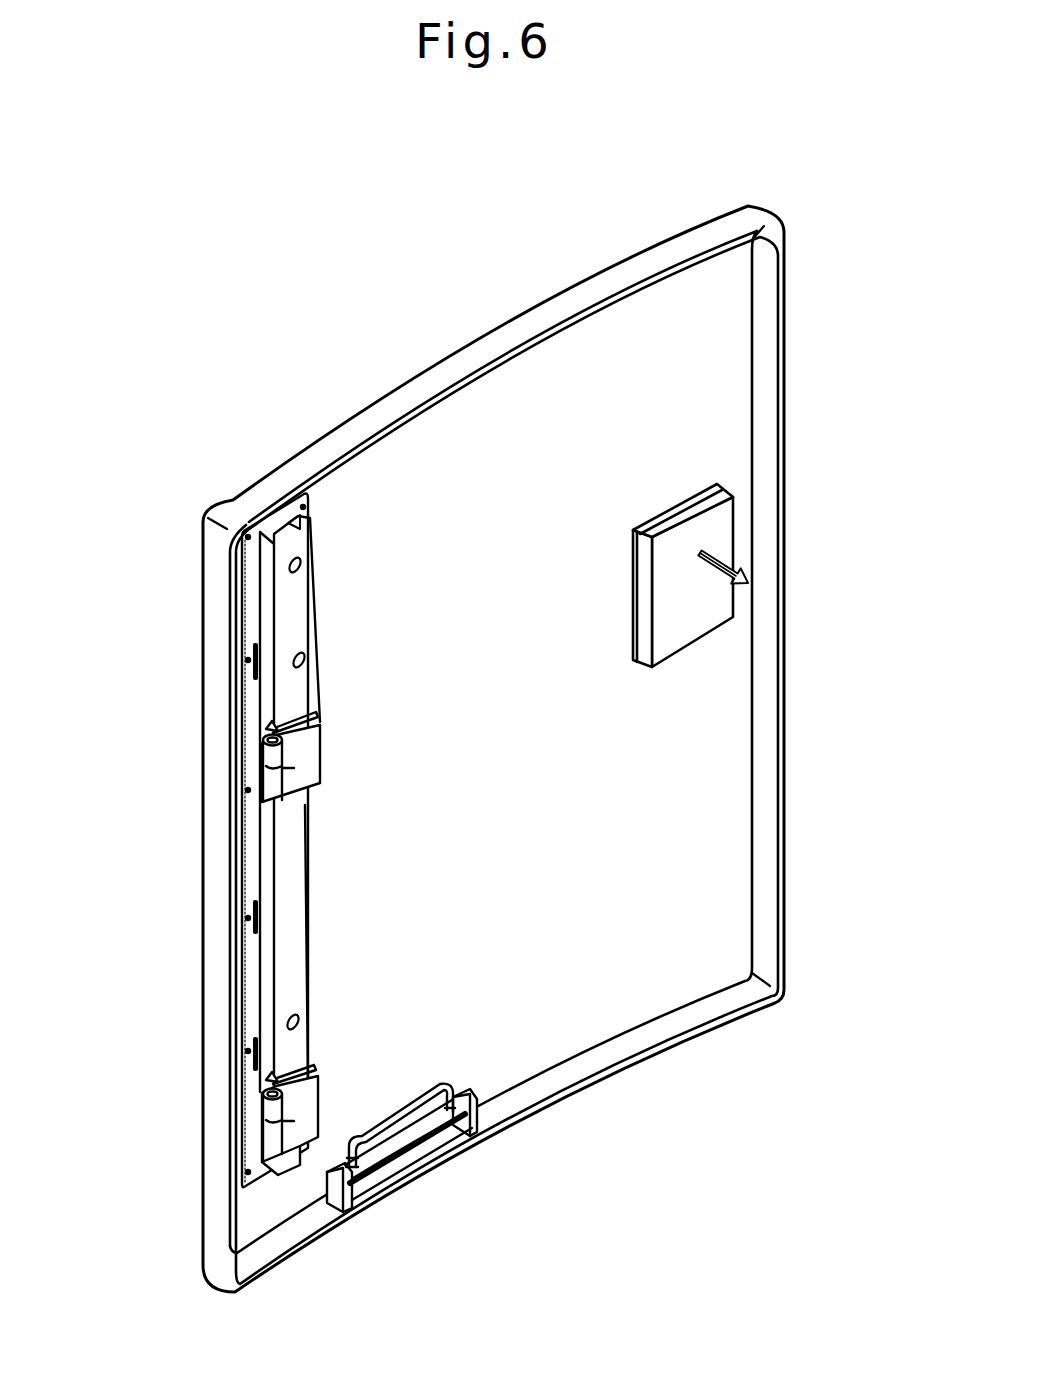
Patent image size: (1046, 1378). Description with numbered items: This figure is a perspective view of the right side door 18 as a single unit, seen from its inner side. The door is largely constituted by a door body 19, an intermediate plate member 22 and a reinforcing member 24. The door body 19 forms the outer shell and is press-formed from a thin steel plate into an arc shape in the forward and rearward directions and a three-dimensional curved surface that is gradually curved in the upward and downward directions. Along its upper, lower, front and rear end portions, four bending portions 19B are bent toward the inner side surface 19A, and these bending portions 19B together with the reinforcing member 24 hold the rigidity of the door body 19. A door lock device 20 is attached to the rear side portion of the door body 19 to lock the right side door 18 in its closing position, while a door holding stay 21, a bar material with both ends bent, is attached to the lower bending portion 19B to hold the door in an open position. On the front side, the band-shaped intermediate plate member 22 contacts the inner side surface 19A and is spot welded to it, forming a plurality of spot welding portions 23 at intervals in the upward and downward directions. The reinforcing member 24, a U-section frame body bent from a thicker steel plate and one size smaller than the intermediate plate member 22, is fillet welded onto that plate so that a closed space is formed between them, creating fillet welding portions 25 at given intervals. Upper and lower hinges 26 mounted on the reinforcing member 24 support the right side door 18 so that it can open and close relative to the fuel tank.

The right side door 18 is at (440, 312).
The door body 19 is at (363, 400).
The inner side surface 19A is at (625, 811).
The bending portions 19B is at (581, 293).
The door lock device 20 is at (713, 533).
The door holding stay 21 is at (400, 1114).
The intermediate plate member 22 is at (245, 711).
The spot welding portions 23 is at (246, 661).
The reinforcing member 24 is at (287, 935).
The fillet welding portions 25 is at (257, 561).
The hinges 26 is at (290, 770).